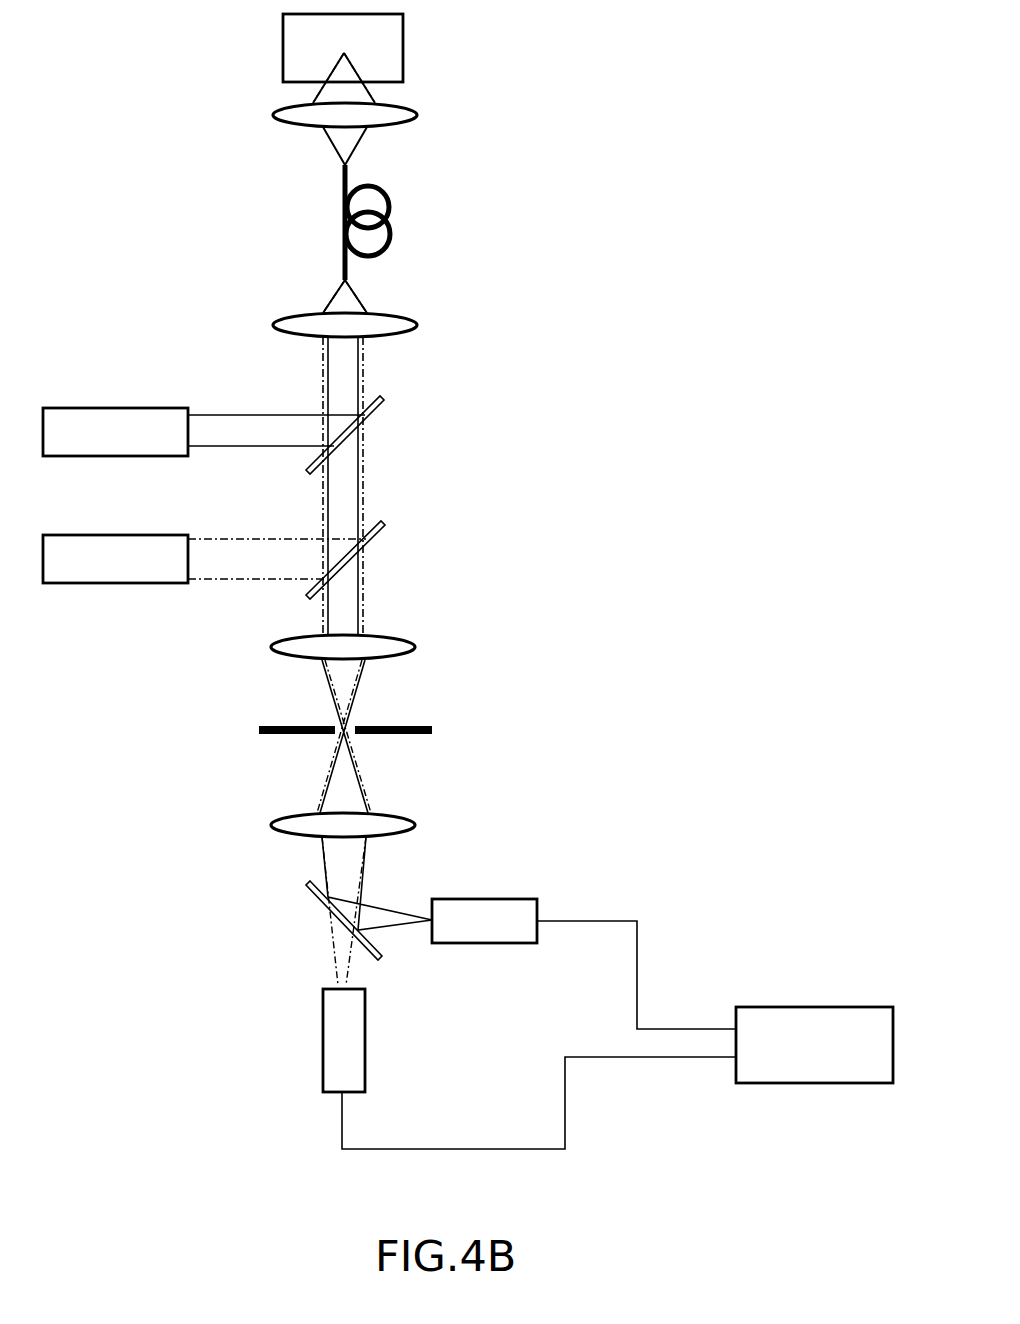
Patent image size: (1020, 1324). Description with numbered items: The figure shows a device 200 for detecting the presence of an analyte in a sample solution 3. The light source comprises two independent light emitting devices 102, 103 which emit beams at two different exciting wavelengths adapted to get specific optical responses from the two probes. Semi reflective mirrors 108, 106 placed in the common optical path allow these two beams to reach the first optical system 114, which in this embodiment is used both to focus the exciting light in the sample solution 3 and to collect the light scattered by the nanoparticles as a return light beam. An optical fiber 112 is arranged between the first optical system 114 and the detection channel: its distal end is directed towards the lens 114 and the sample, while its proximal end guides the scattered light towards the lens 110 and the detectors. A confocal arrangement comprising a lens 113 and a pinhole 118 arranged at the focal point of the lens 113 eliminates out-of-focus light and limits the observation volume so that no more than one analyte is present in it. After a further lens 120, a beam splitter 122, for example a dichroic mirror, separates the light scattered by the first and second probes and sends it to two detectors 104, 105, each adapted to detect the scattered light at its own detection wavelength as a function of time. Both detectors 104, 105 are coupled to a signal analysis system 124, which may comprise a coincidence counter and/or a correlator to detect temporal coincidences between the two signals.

The device for detecting the presence of an analyte 200 is at (713, 355).
The sample solution 3 is at (283, 40).
The first optical system 114 is at (417, 117).
The optical fiber 112 is at (393, 203).
The lens 110 is at (417, 327).
The light emitting device 102 is at (107, 408).
The semi reflective mirror 108 is at (380, 413).
The light emitting device 103 is at (130, 583).
The semi reflective mirror 106 is at (380, 545).
The lens 113 is at (415, 650).
The pinhole 118 is at (437, 732).
The lens 120 is at (272, 824).
The beam splitter 122 is at (313, 900).
The detector 104 is at (505, 899).
The detector 105 is at (323, 1038).
The signal analysis system 124 is at (805, 1007).